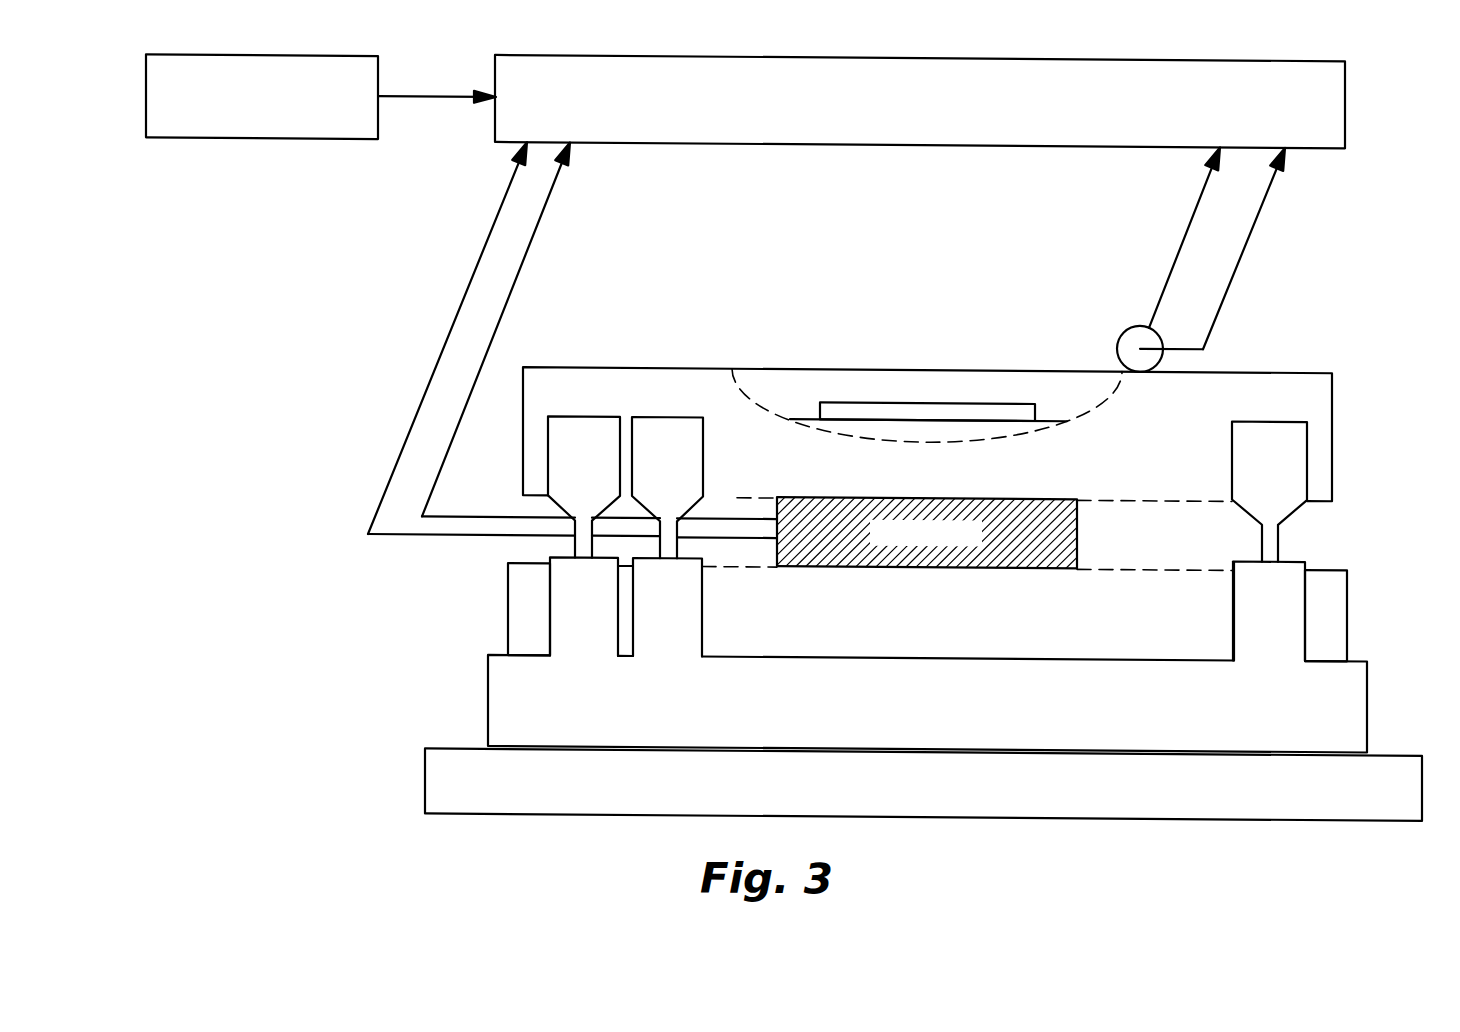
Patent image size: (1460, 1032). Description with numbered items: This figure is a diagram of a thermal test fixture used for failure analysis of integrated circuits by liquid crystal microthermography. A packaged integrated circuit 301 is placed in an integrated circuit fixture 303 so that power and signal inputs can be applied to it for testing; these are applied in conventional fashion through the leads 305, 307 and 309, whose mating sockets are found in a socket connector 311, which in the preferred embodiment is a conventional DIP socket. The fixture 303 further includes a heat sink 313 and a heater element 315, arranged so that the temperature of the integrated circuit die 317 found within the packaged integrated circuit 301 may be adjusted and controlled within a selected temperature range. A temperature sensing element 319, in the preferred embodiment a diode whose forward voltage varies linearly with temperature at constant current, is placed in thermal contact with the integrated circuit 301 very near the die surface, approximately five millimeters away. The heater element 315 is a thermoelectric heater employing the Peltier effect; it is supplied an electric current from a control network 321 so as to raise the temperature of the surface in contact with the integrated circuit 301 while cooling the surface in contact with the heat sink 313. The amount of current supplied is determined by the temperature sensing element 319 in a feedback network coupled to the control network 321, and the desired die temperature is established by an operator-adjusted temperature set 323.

The packaged integrated circuit 301 is at (1293, 367).
The integrated circuit fixture 303 is at (844, 665).
The lead 305 is at (578, 416).
The lead 307 is at (636, 416).
The lead 309 is at (1308, 416).
The socket connector 311 is at (1362, 655).
The heat sink 313 is at (1327, 564).
The heater element 315 is at (1078, 536).
The integrated circuit die 317 is at (863, 400).
The temperature sensing element 319 is at (1124, 329).
The control network 321 is at (800, 143).
The temperature set 323 is at (245, 141).